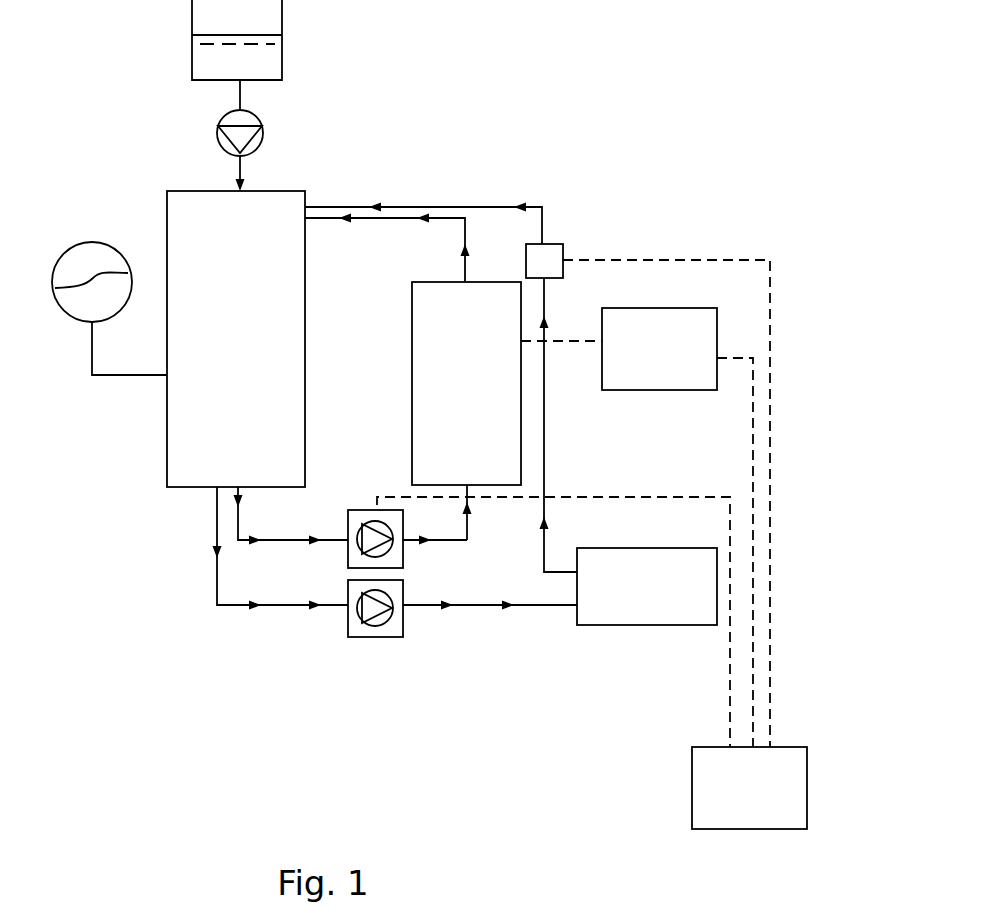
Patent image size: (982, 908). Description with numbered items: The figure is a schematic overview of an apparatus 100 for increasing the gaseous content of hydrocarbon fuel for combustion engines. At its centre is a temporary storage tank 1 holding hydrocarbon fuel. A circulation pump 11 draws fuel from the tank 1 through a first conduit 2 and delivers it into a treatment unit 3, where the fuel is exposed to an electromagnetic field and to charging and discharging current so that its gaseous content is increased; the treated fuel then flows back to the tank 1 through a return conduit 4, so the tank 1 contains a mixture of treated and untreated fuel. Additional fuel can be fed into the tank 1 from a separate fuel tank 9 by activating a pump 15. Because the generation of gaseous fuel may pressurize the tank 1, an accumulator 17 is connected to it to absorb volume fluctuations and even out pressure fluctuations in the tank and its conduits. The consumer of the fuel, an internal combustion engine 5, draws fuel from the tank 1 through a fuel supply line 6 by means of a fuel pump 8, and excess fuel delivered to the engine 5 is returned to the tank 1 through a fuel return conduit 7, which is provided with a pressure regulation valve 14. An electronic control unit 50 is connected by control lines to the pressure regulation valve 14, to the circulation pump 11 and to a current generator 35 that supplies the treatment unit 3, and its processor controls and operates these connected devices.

The temporary storage tank 1 is at (226, 347).
The first conduit 2 is at (280, 540).
The treatment unit 3 is at (459, 349).
The return conduit 4 is at (407, 213).
The internal combustion engine 5 is at (626, 603).
The fuel supply line 6 is at (235, 606).
The fuel return conduit 7 is at (355, 203).
The fuel pump 8 is at (382, 627).
The fuel tank 9 is at (192, 62).
The circulation pump 11 is at (398, 558).
The pressure regulation valve 14 is at (545, 245).
The pump 15 is at (218, 140).
The accumulator 17 is at (110, 242).
The current generator 35 is at (633, 365).
The electronic control unit 50 is at (722, 803).
The apparatus 100 is at (429, 414).